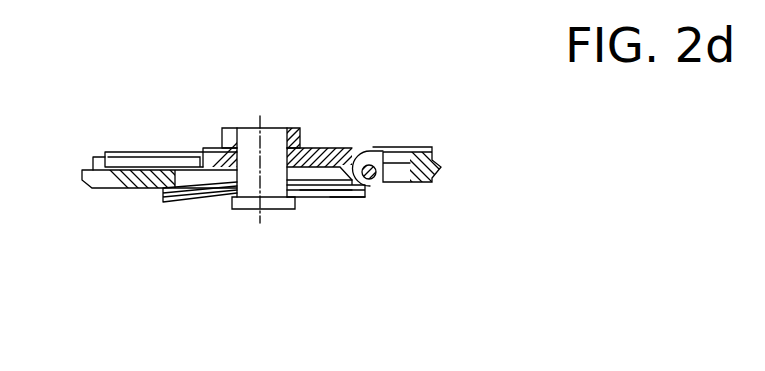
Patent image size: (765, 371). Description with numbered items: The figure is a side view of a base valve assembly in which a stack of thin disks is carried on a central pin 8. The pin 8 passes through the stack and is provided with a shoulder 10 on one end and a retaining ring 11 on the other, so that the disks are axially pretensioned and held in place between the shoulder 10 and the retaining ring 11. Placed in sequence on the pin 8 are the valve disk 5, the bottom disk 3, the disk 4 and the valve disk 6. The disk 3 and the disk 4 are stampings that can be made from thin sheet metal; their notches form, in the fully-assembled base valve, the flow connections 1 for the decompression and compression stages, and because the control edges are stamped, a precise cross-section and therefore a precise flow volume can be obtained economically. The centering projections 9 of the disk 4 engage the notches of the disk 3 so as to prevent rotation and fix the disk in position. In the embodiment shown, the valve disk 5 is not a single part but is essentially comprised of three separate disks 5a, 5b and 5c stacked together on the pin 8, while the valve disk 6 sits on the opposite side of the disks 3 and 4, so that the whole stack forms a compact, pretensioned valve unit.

The flow connections 1 is at (148, 162).
The disk 3 is at (112, 186).
The disk 4 is at (327, 147).
The valve disk 5 is at (205, 200).
The disk 5a is at (312, 186).
The disk 5b is at (373, 147).
The disk 5c is at (355, 197).
The valve disk 6 is at (126, 144).
The pin 8 is at (272, 142).
The centering projections 9 is at (371, 180).
The shoulder 10 is at (283, 209).
The retaining ring 11 is at (227, 128).